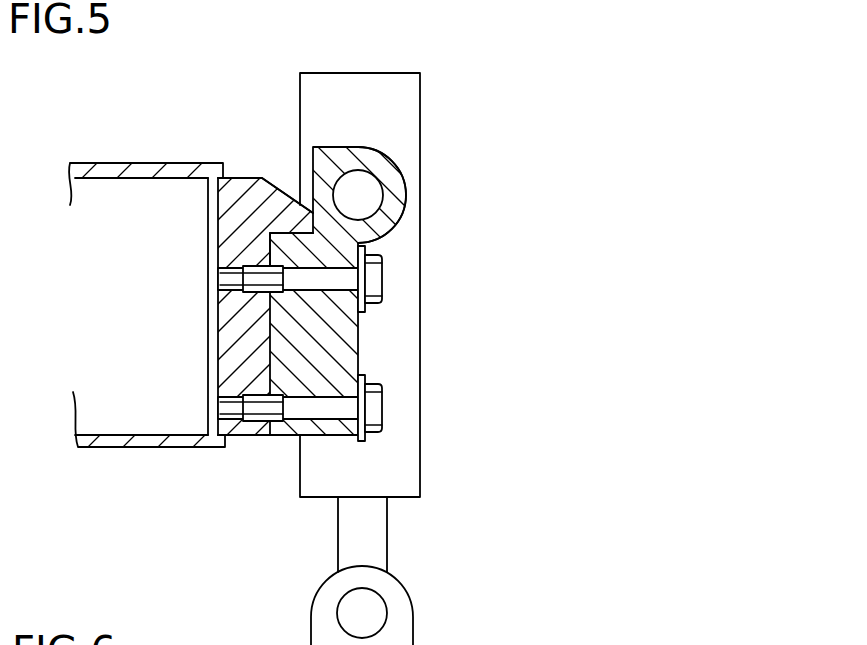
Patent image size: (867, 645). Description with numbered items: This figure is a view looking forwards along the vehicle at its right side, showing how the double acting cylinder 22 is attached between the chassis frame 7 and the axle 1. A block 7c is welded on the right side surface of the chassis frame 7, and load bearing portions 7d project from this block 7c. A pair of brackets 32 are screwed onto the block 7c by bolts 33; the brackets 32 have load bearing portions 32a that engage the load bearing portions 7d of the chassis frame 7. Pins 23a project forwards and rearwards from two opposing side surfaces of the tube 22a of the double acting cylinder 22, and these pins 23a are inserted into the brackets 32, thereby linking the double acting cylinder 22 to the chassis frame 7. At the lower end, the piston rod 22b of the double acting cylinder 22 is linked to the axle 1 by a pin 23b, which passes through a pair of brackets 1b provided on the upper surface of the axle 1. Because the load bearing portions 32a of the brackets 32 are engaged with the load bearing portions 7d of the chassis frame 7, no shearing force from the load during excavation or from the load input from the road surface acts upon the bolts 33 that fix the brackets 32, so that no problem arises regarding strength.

The chassis frame 7 is at (130, 163).
The block 7c is at (250, 193).
The load bearing portions 7d is at (277, 193).
The double acting cylinder 22 is at (422, 118).
The tube 22a is at (420, 157).
The piston rod 22b is at (337, 543).
The pins 23a is at (368, 200).
The pin 23b is at (348, 607).
The brackets 32 is at (407, 197).
The load bearing portions 32a is at (278, 247).
The bolts 33 is at (384, 405).
The brackets 1b is at (410, 593).
The axle 1 is at (510, 644).